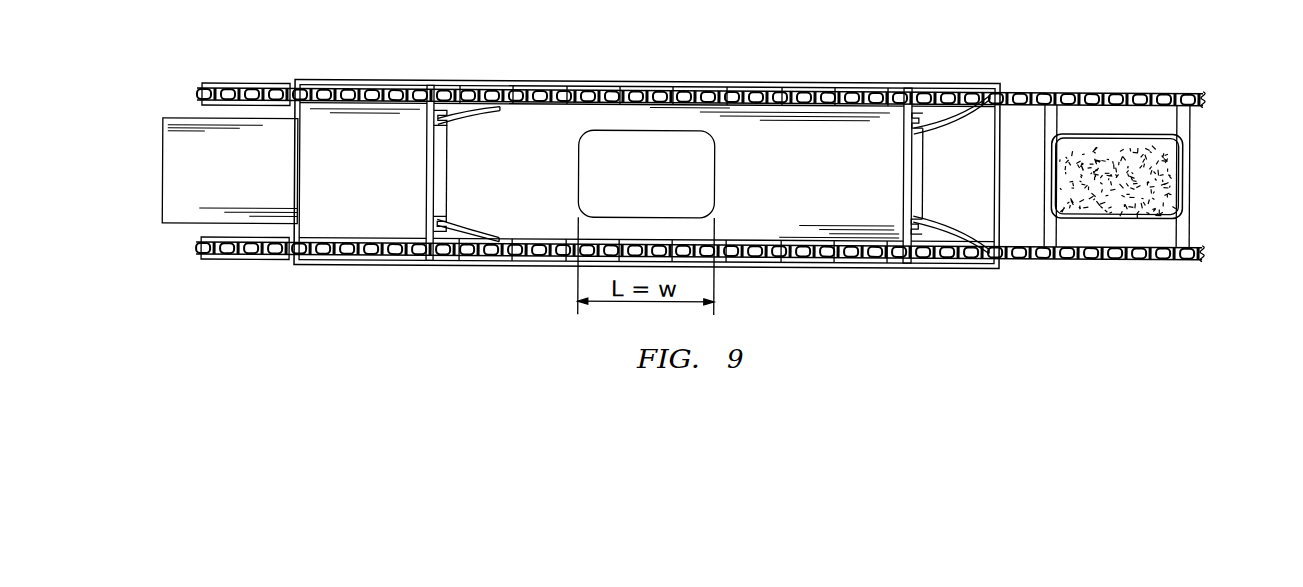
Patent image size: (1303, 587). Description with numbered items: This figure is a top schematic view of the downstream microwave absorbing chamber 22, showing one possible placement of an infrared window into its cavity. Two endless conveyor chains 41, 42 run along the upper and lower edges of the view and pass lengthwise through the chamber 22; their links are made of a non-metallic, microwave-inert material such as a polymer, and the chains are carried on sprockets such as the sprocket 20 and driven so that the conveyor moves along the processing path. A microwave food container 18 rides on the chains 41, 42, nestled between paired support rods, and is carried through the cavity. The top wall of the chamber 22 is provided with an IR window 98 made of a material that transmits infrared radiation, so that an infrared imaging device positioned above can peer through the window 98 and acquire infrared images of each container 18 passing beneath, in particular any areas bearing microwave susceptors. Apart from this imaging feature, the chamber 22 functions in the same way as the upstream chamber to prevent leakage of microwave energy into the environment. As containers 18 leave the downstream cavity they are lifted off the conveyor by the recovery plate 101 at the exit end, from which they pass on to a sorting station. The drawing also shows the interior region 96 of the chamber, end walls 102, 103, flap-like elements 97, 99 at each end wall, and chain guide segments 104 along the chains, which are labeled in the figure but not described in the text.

The microwave food container 18 is at (1118, 129).
The sprocket 20 is at (246, 83).
The downstream microwave absorbing chamber 22 is at (817, 70).
The chain 41 is at (1066, 88).
The chain 42 is at (1064, 251).
The chamber 96 is at (788, 192).
The rear flap 97 is at (936, 126).
The IR window 98 is at (648, 128).
The front flap 99 is at (456, 128).
The recovery plate 101 is at (178, 117).
The rear wall 102 is at (901, 169).
The front wall 103 is at (426, 150).
The chain guide segment 104 is at (541, 88).